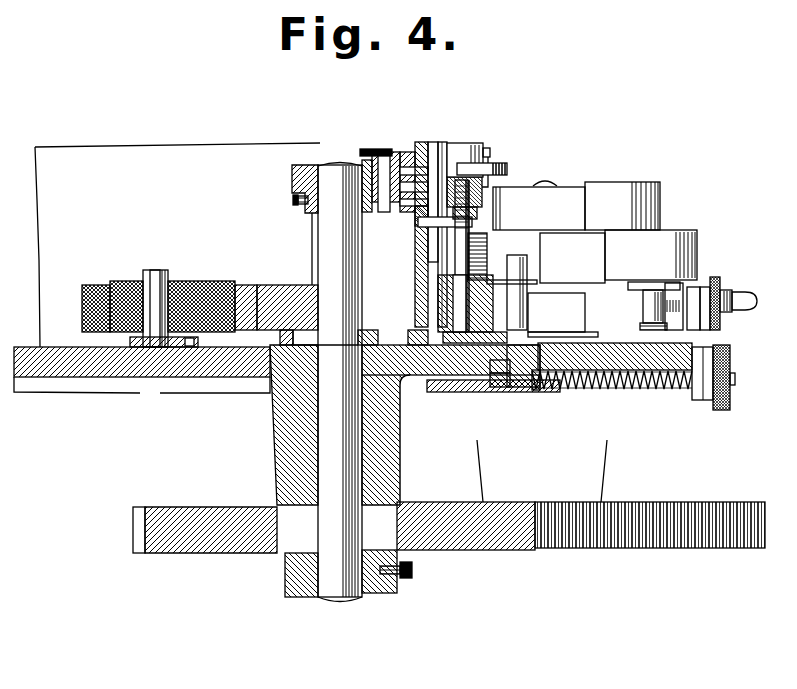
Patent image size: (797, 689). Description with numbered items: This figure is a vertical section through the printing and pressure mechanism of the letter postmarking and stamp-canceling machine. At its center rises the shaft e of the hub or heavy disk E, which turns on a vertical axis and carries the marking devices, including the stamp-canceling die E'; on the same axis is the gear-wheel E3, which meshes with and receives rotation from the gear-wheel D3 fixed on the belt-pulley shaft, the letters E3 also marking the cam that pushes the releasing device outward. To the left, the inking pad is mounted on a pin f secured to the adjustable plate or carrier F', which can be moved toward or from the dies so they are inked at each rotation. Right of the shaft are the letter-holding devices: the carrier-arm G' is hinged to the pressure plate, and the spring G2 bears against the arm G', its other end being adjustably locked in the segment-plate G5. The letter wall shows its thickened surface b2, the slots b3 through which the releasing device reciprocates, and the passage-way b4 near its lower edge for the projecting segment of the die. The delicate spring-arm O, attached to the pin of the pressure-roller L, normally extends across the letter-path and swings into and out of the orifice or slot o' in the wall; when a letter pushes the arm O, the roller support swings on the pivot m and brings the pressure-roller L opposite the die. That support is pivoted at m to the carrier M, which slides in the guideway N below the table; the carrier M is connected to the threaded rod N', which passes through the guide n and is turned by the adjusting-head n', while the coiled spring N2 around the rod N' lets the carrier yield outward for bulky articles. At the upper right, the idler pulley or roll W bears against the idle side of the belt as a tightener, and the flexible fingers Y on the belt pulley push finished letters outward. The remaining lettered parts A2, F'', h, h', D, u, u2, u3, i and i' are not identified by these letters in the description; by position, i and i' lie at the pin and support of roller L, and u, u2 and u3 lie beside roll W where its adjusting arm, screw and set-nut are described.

The base plate A2 is at (72, 352).
The shaft e is at (334, 166).
The gear-wheel E3 is at (110, 533).
The gear-wheel D3 is at (764, 550).
The adjustable plate or carrier F' is at (158, 289).
The pin f is at (158, 272).
The clamp plate F'' is at (122, 334).
The stamp-canceling die E' is at (248, 288).
The hub or heavy disk E is at (287, 294).
The clamp block h is at (386, 159).
The comb plate h' is at (420, 157).
The passage-way b4 is at (420, 305).
The slots b3 is at (415, 212).
The surface b2 is at (437, 145).
The orifice or slot o' is at (418, 234).
The spring-arm O is at (445, 228).
The carrier-arm G' is at (463, 159).
The spring G2 is at (490, 160).
The segment-plate G5 is at (507, 170).
The flexible fingers Y is at (557, 205).
The carriage block D is at (600, 232).
The idler pulley or roll W is at (685, 247).
The adjusting post u is at (645, 326).
The adjusting handle u2 is at (727, 296).
The knurled disk u3 is at (722, 322).
The pressure-roller L is at (446, 300).
The pin plate i' is at (475, 382).
The pocket i is at (422, 422).
The pivot m is at (520, 388).
The carrier M is at (511, 345).
The guideway N is at (615, 386).
The threaded rod N' is at (612, 413).
The coiled spring N2 is at (648, 376).
The guide n is at (702, 388).
The adjusting-head n' is at (724, 393).